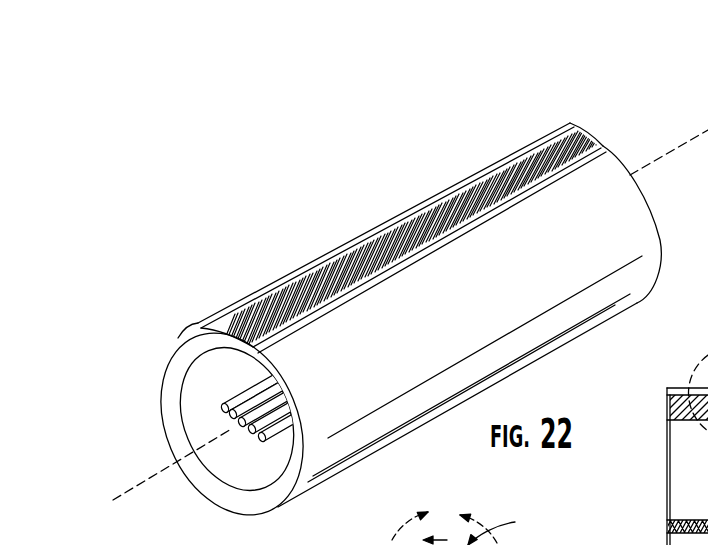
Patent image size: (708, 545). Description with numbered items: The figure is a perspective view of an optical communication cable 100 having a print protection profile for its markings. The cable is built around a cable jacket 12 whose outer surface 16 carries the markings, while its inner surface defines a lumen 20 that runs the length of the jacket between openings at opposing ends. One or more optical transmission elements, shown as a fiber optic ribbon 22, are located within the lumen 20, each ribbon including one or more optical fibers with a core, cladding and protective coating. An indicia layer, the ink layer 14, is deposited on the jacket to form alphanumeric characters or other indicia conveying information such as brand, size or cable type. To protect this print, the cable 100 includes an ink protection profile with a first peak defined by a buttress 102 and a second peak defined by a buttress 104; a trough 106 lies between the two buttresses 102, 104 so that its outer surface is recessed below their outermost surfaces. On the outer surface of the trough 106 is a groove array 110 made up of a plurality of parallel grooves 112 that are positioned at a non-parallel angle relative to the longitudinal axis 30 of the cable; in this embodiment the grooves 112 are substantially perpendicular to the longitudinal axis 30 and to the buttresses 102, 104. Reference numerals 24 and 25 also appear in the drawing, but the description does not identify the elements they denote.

The cable jacket 12 is at (172, 388).
The ink layer 14 is at (502, 526).
The outer surface 16 is at (332, 420).
The lumen 20 is at (255, 463).
The fiber optic ribbon 22 is at (222, 430).
The rotation direction 24 is at (444, 520).
The rotation direction 25 is at (423, 538).
The longitudinal axis 30 is at (687, 147).
The optical communication cable 100 is at (403, 208).
The buttress 102 is at (572, 122).
The buttress 104 is at (603, 146).
The trough 106 is at (597, 122).
The groove array 110 is at (233, 342).
The grooves 112 is at (307, 264).